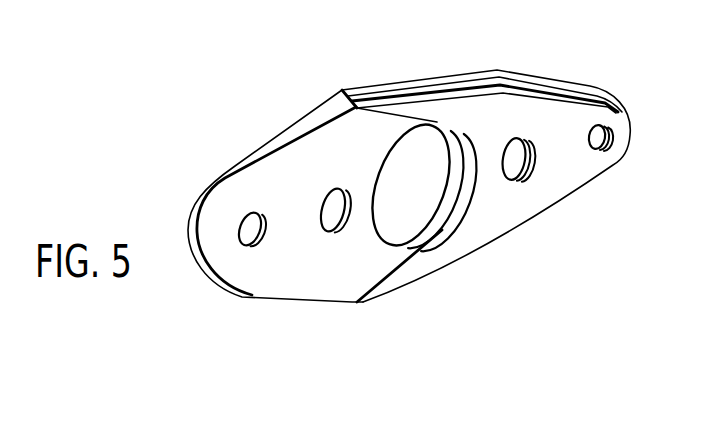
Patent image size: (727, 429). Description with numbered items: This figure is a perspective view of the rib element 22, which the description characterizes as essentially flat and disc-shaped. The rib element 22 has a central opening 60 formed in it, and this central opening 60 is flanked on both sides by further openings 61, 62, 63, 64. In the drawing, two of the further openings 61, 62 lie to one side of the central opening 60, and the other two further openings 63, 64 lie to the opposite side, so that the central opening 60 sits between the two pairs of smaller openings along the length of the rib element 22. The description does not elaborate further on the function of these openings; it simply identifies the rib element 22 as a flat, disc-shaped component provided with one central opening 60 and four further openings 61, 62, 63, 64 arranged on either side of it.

The rib element 22 is at (146, 182).
The central opening 60 is at (432, 135).
The further opening 61 is at (249, 216).
The further opening 62 is at (332, 197).
The further opening 63 is at (518, 138).
The further opening 64 is at (608, 127).